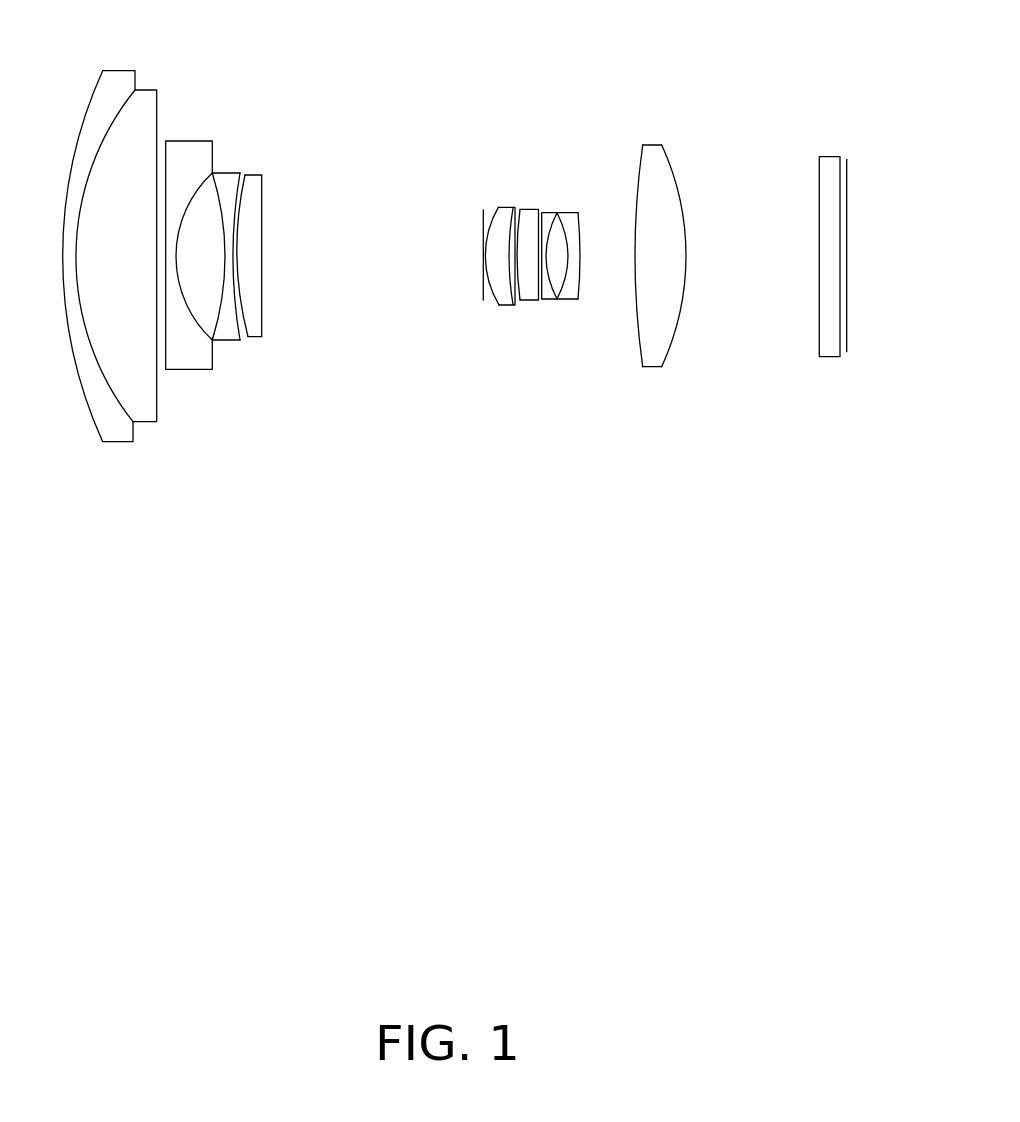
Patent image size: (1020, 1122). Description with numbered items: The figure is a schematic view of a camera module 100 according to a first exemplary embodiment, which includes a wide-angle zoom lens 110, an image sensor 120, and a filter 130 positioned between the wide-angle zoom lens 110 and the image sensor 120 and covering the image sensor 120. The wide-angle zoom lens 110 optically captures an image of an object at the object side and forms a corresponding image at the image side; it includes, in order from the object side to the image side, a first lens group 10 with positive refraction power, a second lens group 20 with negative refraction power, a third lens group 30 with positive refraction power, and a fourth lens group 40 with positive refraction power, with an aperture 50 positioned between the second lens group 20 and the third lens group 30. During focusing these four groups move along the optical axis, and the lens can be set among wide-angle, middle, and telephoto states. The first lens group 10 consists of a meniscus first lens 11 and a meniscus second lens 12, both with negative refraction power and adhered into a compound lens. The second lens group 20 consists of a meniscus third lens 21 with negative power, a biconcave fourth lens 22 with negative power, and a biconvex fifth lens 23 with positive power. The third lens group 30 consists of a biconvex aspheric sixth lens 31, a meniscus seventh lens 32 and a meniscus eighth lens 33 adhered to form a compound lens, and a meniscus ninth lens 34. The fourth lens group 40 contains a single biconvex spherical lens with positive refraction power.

The camera module 100 is at (425, 70).
The wide-angle zoom lens 110 is at (677, 467).
The first lens group 10 is at (143, 510).
The first lens 11 is at (112, 423).
The second lens 12 is at (142, 410).
The second lens group 20 is at (291, 442).
The third lens 21 is at (197, 357).
The fourth lens 22 is at (226, 330).
The fifth lens 23 is at (254, 327).
The aperture 50 is at (483, 280).
The third lens group 30 is at (588, 410).
The sixth lens 31 is at (502, 305).
The seventh lens 32 is at (530, 305).
The eighth lens 33 is at (548, 305).
The ninth lens 34 is at (565, 305).
The fourth lens group 40 is at (652, 356).
The filter 130 is at (827, 342).
The image sensor 120 is at (847, 323).